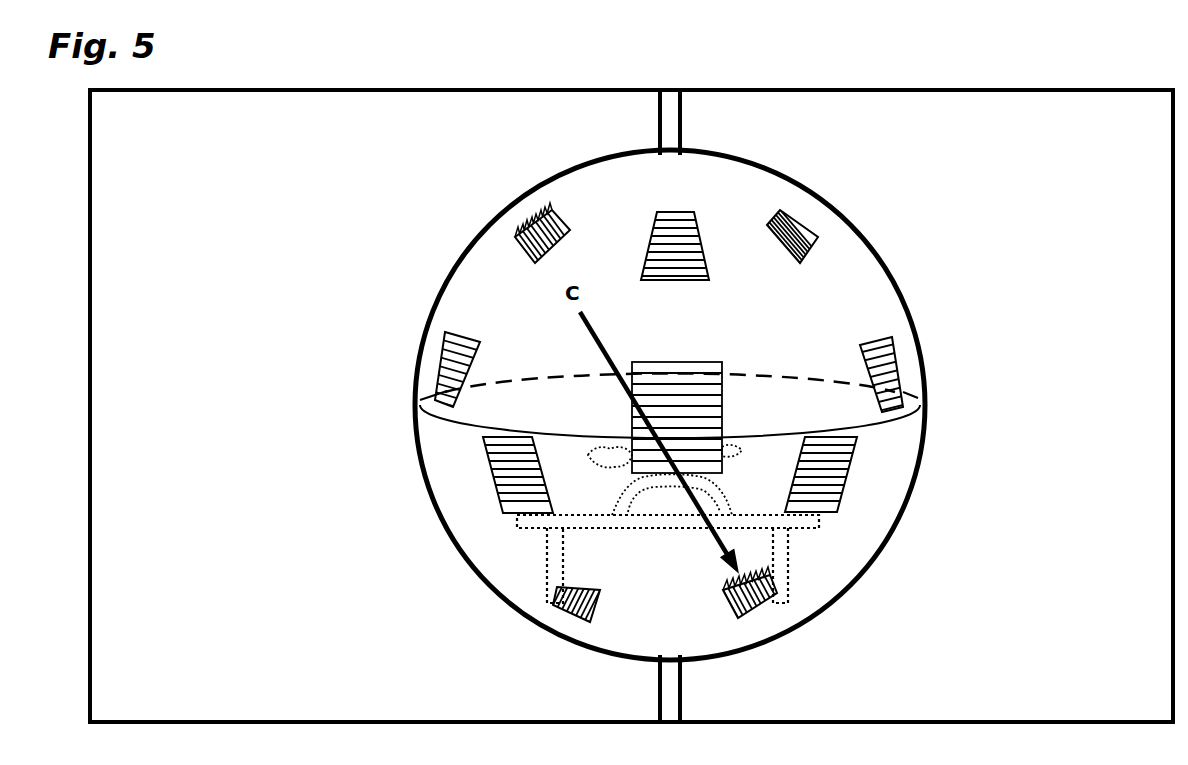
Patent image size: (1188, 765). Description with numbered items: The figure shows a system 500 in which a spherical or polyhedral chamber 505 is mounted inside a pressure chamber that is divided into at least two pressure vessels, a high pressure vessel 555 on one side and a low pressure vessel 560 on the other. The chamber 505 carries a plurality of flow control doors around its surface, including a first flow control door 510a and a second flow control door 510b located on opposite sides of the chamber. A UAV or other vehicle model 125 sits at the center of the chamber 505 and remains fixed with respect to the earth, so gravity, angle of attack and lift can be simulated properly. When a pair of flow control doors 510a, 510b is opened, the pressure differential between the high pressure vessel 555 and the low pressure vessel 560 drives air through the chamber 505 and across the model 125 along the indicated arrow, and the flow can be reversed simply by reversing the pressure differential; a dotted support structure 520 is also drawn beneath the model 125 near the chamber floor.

The system 500 is at (360, 52).
The spherical or polyhedral chamber 505 is at (586, 185).
The flow control door 510a is at (515, 240).
The flow control door 510b is at (737, 612).
The support structure 520 is at (797, 528).
The model 125 is at (608, 450).
The high pressure vessel 555 is at (239, 430).
The low pressure vessel 560 is at (1088, 446).